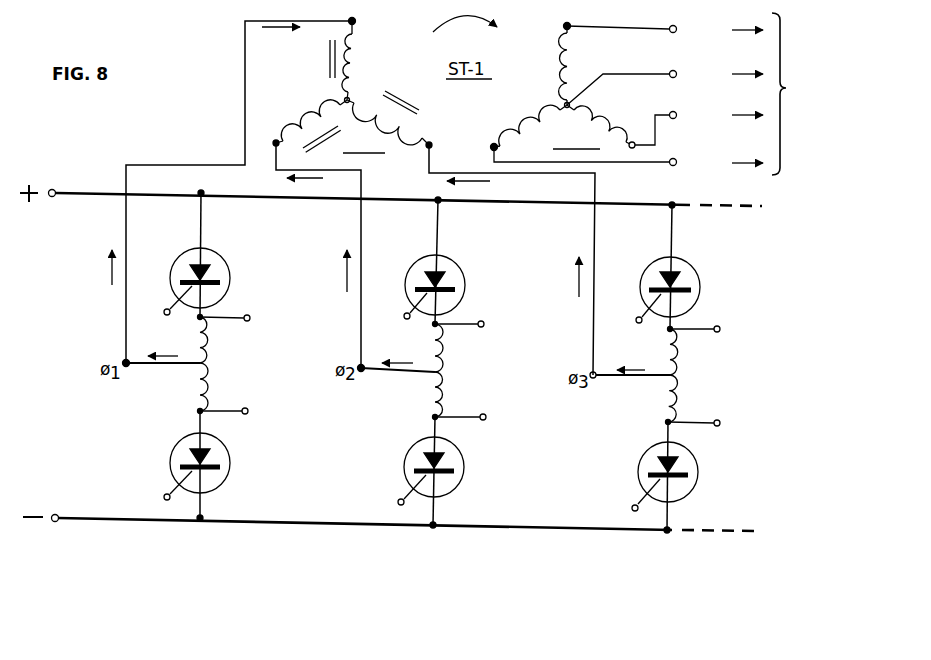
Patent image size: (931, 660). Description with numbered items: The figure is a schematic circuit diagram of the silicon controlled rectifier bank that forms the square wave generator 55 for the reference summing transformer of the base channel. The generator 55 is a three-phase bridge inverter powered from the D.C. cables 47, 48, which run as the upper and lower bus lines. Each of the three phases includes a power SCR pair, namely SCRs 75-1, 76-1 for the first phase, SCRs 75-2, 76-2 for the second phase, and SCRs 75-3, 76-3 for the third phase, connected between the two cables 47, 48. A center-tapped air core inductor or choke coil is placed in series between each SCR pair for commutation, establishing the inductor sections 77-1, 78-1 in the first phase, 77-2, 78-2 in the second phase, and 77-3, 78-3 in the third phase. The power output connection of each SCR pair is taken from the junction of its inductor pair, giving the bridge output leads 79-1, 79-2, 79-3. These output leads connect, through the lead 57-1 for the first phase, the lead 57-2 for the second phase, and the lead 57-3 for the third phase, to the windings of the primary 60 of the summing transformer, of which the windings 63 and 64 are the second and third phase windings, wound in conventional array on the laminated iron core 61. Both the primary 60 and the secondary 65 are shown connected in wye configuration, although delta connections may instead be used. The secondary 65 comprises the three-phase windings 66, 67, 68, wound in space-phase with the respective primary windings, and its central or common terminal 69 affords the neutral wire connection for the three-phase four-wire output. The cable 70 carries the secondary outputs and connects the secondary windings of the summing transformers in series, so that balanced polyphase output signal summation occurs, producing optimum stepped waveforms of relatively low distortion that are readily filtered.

The D.C. cable 47 is at (78, 197).
The D.C. cable 48 is at (72, 513).
The square wave generator 55 is at (47, 344).
The lead for phase 1 57-1 is at (126, 237).
The lead for phase 2 57-2 is at (361, 237).
The lead for phase 3 57-3 is at (593, 240).
The primary 60 is at (360, 195).
The laminated iron core 61 is at (330, 47).
The primary winding 63 is at (310, 119).
The primary winding 64 is at (414, 123).
The secondary 65 is at (598, 98).
The secondary winding 66 is at (576, 65).
The secondary winding 67 is at (530, 125).
The secondary winding 68 is at (608, 127).
The central or common terminal 69 is at (569, 103).
The cable 70 is at (812, 96).
The power SCR 75-1 is at (230, 278).
The power SCR 75-2 is at (465, 282).
The power SCR 75-3 is at (700, 284).
The power SCR 76-1 is at (229, 458).
The power SCR 76-2 is at (464, 462).
The power SCR 76-3 is at (698, 470).
The inductor section 77-1 is at (213, 342).
The inductor section 77-2 is at (446, 352).
The inductor section 77-3 is at (680, 358).
The inductor section 78-1 is at (212, 386).
The inductor section 78-2 is at (446, 396).
The inductor section 78-3 is at (678, 400).
The bridge output lead 79-1 is at (162, 374).
The bridge output lead 79-2 is at (390, 372).
The bridge output lead 79-3 is at (630, 388).